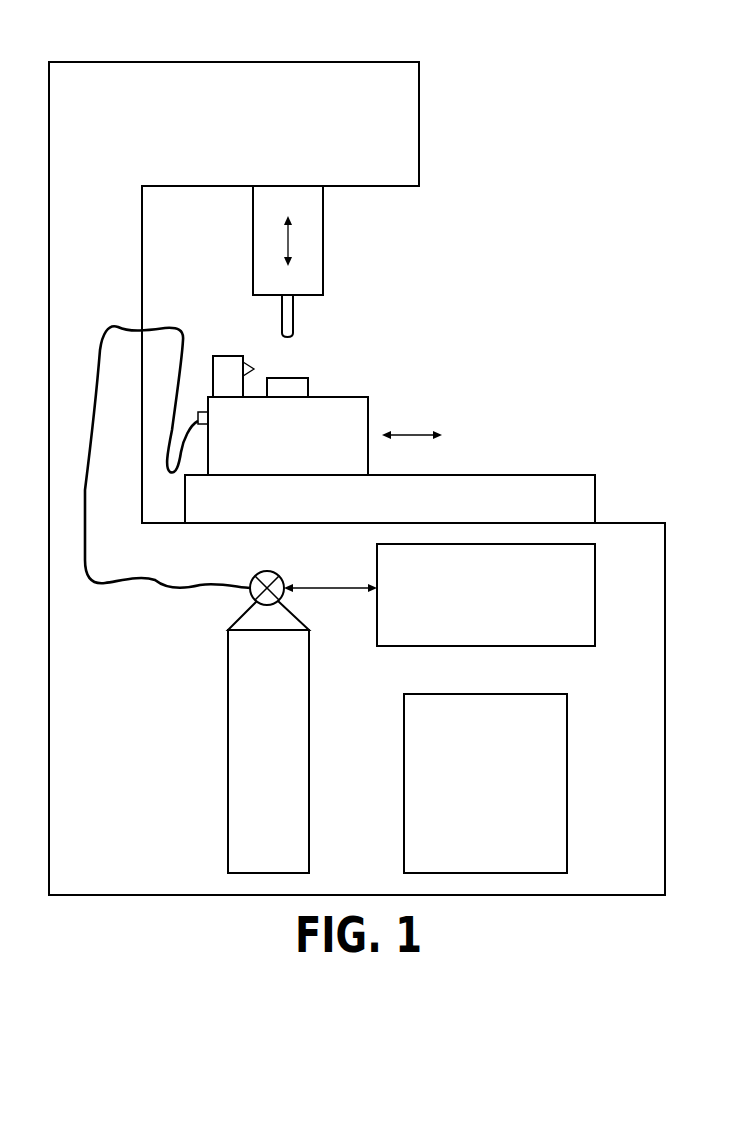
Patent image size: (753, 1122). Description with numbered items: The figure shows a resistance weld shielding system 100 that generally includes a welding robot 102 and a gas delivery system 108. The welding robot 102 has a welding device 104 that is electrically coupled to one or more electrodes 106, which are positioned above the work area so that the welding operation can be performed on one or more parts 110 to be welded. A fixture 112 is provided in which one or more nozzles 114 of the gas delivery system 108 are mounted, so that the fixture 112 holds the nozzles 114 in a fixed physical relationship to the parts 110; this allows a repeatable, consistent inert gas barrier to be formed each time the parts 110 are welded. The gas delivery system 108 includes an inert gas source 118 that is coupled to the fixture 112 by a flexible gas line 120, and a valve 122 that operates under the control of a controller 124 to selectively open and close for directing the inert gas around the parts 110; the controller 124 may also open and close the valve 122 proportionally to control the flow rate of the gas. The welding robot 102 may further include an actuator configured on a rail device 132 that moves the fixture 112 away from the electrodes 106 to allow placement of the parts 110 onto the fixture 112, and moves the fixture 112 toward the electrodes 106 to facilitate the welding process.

The resistance weld shielding system 100 is at (556, 56).
The welding robot 102 is at (234, 62).
The welding device 104 is at (568, 783).
The electrodes 106 is at (295, 331).
The gas delivery system 108 is at (160, 704).
The parts 110 is at (308, 389).
The fixture 112 is at (370, 410).
The nozzles 114 is at (254, 369).
The inert gas source 118 is at (309, 756).
The flexible gas line 120 is at (174, 592).
The valve 122 is at (262, 572).
The controller 124 is at (597, 596).
The rail device 132 is at (597, 500).